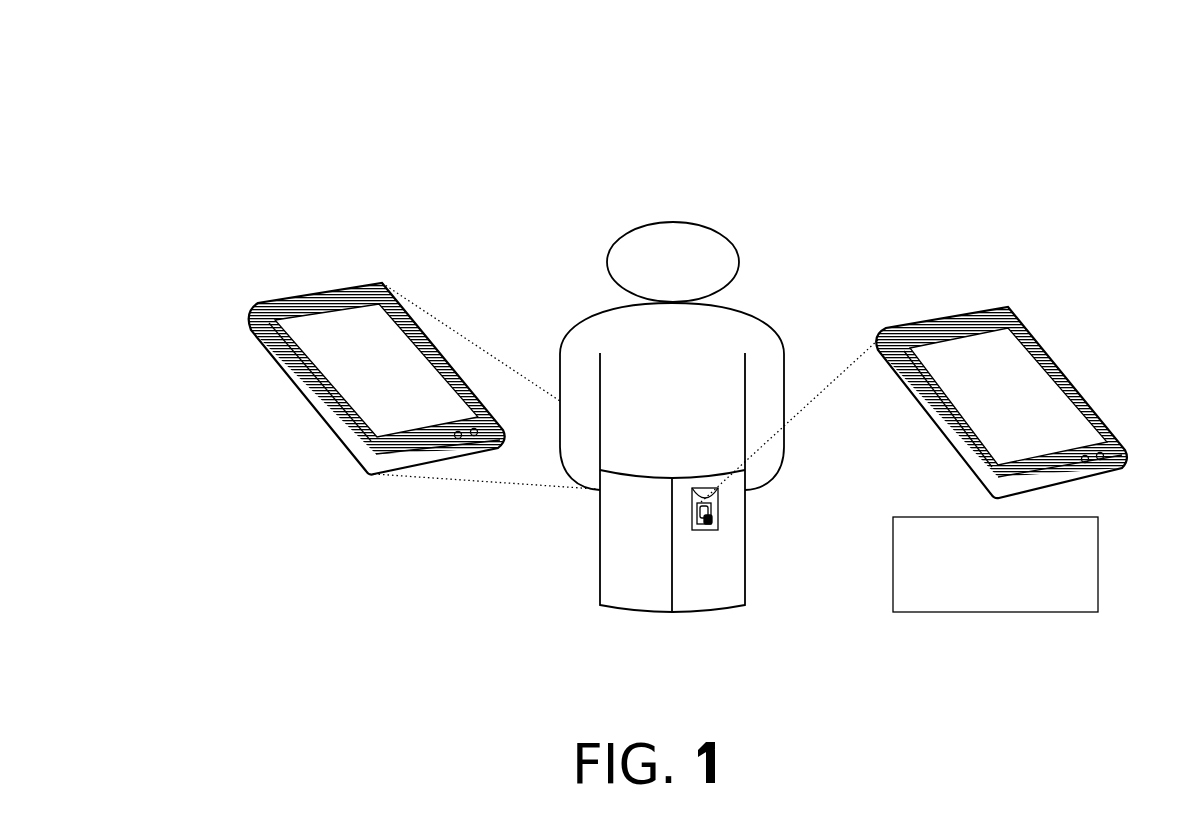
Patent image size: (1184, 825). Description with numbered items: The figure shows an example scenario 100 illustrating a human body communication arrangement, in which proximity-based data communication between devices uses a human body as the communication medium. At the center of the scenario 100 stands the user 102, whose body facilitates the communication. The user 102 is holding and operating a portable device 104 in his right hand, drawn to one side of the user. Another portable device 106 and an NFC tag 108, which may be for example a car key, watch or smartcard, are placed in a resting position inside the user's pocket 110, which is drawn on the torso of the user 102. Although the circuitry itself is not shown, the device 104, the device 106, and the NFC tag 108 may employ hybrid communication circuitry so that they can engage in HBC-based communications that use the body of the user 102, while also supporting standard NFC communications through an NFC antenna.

The scenario 100 is at (170, 58).
The user 102 is at (629, 226).
The portable device 104 is at (250, 288).
The portable device 106 is at (1067, 360).
The NFC tag 108 is at (712, 530).
The user's pocket 110 is at (724, 503).